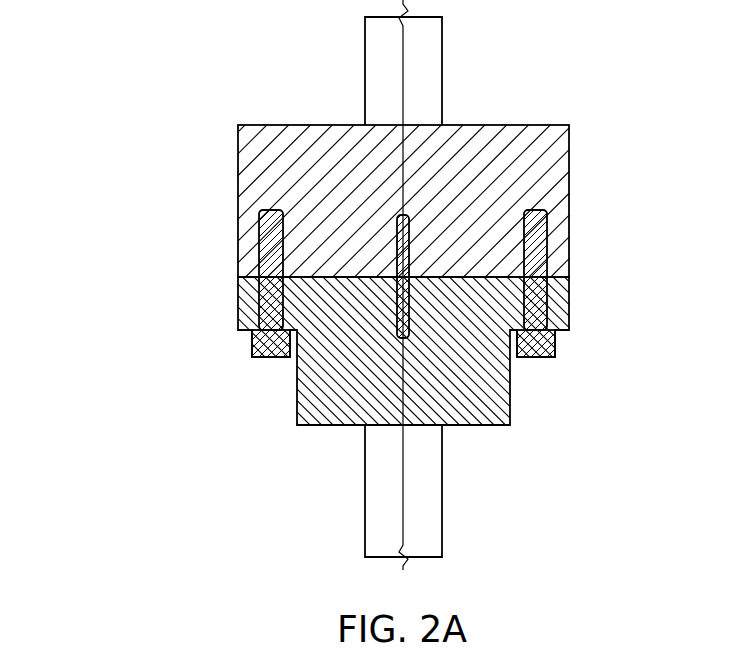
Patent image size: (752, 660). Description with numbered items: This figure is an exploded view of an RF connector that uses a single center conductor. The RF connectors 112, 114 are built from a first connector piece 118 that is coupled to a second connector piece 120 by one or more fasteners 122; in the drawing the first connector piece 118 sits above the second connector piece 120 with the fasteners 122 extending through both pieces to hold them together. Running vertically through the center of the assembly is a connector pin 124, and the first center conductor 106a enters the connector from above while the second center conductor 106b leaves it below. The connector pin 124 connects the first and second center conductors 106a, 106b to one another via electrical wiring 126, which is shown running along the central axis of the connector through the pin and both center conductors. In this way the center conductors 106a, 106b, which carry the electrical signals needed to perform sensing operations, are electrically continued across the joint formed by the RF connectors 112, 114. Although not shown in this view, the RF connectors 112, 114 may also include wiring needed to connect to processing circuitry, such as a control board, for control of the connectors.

The RF connector 112 is at (183, 64).
The RF connector 114 is at (183, 64).
The first center conductor 106a is at (442, 43).
The second center conductor 106b is at (365, 513).
The first connector piece 118 is at (569, 165).
The second connector piece 120 is at (510, 396).
The fasteners 122 is at (262, 232).
The connector pin 124 is at (398, 224).
The electrical wiring 126 is at (402, 81).